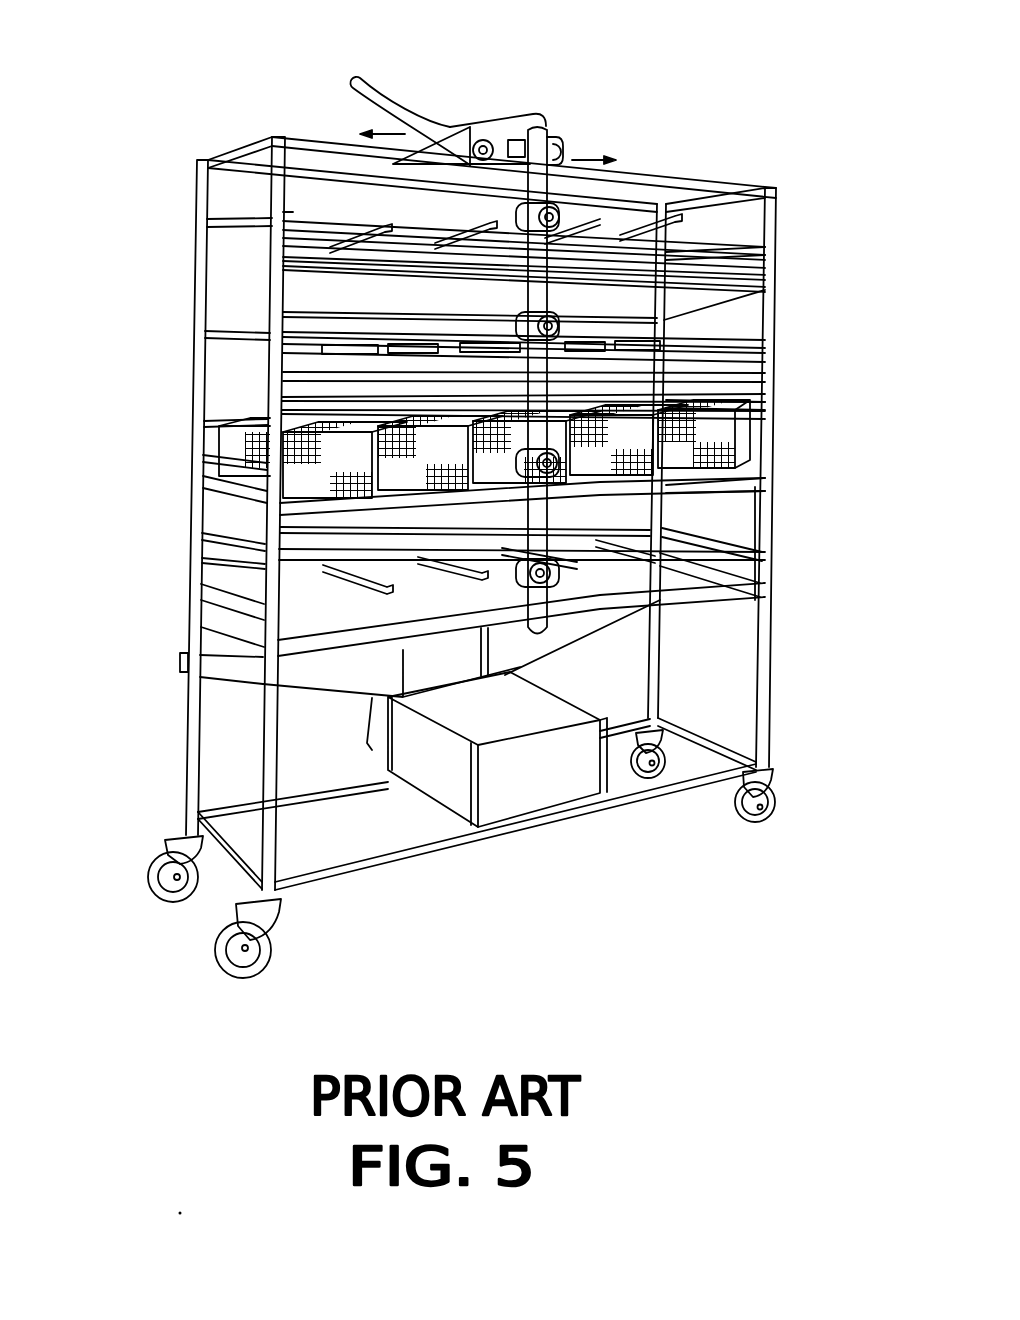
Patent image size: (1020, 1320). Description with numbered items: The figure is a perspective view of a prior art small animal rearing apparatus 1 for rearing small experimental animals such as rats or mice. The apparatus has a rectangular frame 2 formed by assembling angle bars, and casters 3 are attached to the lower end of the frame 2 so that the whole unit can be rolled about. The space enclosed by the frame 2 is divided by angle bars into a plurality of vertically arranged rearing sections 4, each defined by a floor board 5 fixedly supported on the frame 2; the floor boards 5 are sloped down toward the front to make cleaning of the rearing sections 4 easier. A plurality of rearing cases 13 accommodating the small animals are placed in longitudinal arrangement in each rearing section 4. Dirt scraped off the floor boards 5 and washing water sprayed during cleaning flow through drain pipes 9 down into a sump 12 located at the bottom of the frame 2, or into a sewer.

The small animal rearing apparatus 1 is at (640, 110).
The frame 2 is at (773, 230).
The casters 3 is at (273, 946).
The rearing sections 4 is at (223, 250).
The floor boards 5 is at (243, 302).
The drain pipes 9 is at (522, 642).
The sump 12 is at (543, 783).
The rearing cases 13 is at (237, 445).